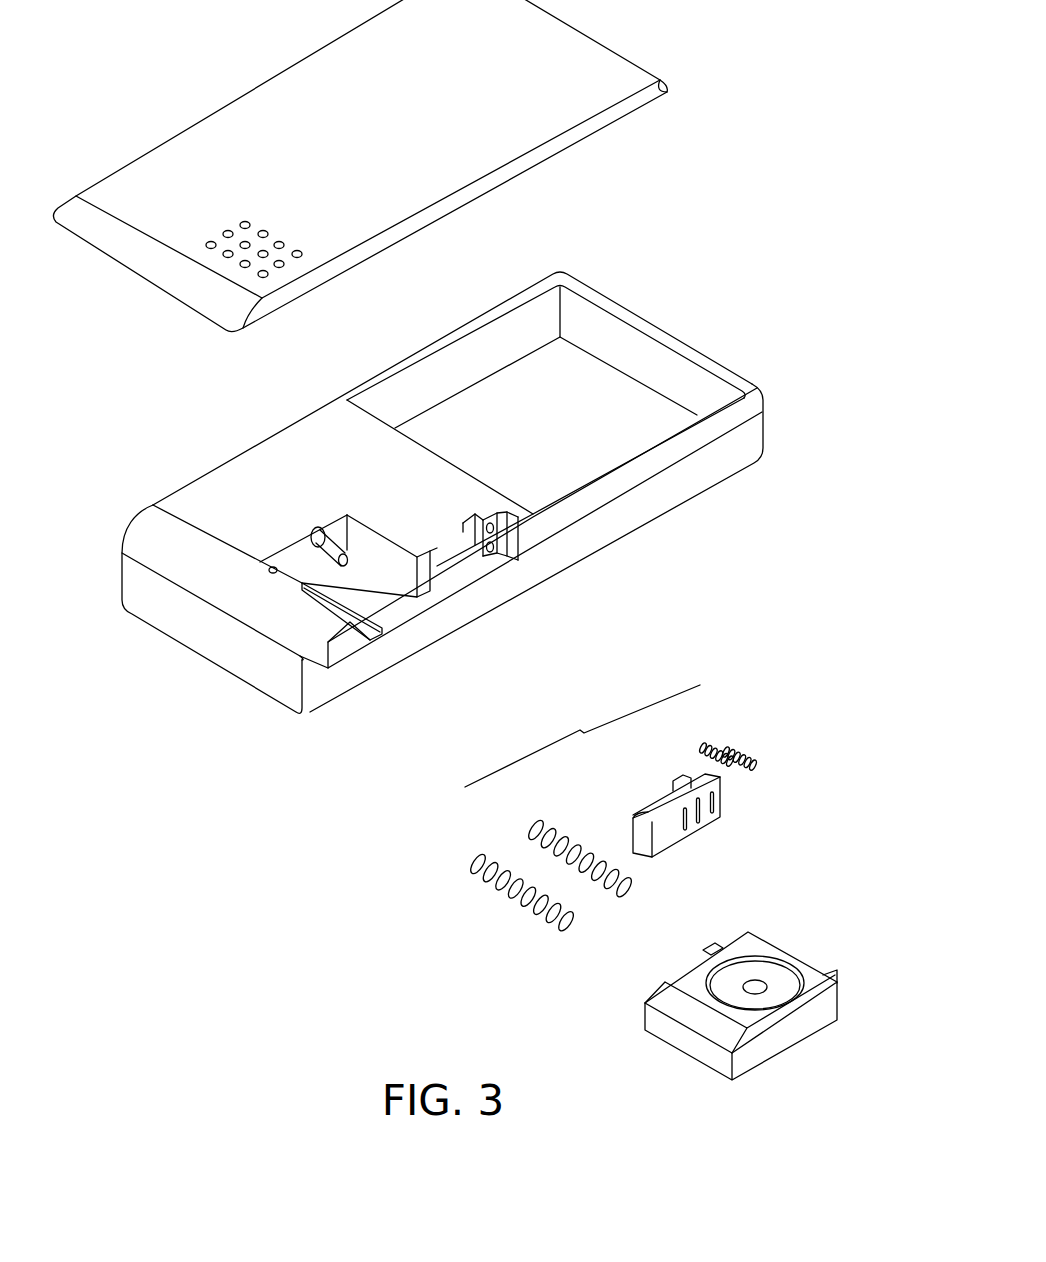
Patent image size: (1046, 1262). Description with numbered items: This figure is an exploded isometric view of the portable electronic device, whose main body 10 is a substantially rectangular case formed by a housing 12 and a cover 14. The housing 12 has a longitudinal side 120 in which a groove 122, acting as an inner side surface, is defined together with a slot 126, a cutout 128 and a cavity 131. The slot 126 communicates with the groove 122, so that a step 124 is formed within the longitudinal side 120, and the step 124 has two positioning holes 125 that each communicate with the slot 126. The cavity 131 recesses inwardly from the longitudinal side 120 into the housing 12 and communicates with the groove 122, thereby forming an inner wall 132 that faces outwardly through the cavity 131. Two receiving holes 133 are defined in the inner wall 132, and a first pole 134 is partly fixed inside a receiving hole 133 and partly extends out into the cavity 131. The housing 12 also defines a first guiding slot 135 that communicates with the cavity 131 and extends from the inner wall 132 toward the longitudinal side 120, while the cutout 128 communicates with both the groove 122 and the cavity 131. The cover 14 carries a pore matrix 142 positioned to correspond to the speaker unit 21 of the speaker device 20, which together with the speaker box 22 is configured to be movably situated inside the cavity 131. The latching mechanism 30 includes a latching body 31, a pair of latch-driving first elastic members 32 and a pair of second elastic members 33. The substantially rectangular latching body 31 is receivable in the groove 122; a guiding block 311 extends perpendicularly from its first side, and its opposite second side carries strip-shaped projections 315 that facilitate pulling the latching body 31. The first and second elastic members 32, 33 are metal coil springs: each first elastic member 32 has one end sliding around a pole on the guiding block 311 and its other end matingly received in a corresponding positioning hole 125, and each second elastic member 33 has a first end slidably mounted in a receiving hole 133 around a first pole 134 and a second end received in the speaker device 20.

The main body 10 is at (790, 102).
The housing 12 is at (662, 308).
The cover 14 is at (675, 92).
The pore matrix 142 is at (303, 258).
The longitudinal side 120 is at (720, 462).
The groove 122 is at (510, 515).
The step 124 is at (503, 532).
The positioning holes 125 is at (488, 556).
The slot 126 is at (478, 568).
The cutout 128 is at (437, 580).
The cavity 131 is at (390, 603).
The inner wall 132 is at (293, 563).
The receiving holes 133 is at (323, 530).
The first pole 134 is at (342, 555).
The first guiding slot 135 is at (378, 633).
The latching mechanism 30 is at (582, 736).
The latching body 31 is at (662, 808).
The guiding block 311 is at (717, 777).
The strip-shaped projections 315 is at (703, 824).
The first elastic members 32 is at (755, 742).
The second elastic members 33 is at (530, 835).
The speaker device 20 is at (600, 942).
The speaker unit 21 is at (728, 987).
The speaker box 22 is at (687, 1042).